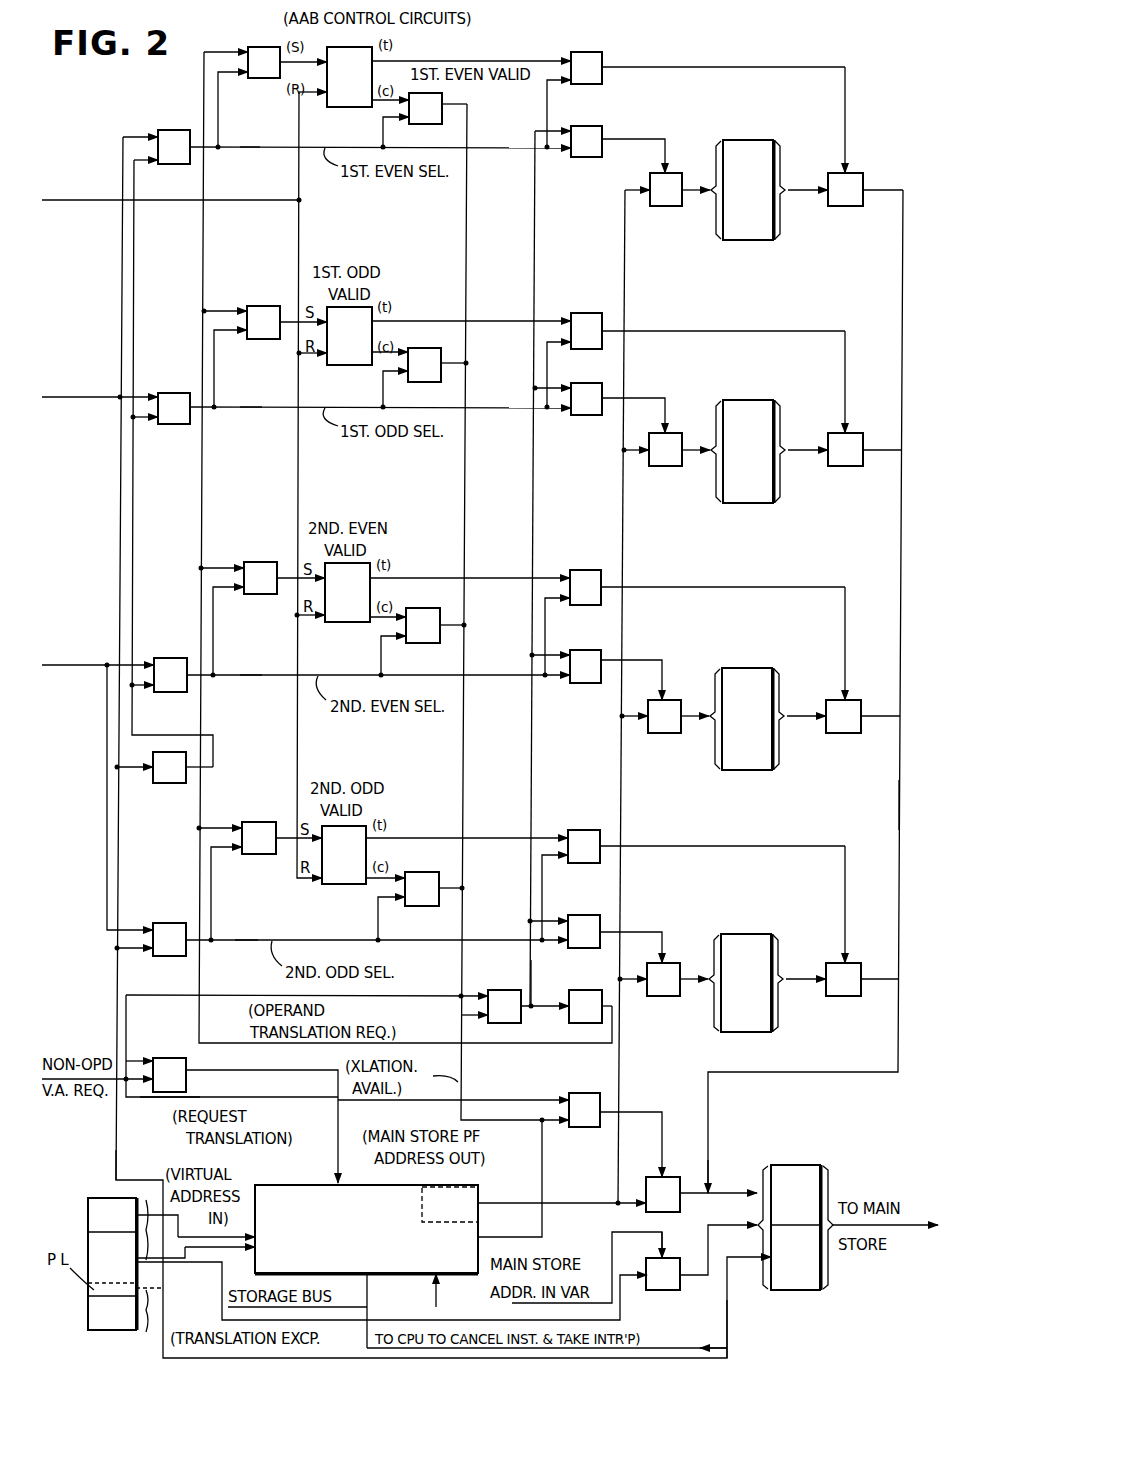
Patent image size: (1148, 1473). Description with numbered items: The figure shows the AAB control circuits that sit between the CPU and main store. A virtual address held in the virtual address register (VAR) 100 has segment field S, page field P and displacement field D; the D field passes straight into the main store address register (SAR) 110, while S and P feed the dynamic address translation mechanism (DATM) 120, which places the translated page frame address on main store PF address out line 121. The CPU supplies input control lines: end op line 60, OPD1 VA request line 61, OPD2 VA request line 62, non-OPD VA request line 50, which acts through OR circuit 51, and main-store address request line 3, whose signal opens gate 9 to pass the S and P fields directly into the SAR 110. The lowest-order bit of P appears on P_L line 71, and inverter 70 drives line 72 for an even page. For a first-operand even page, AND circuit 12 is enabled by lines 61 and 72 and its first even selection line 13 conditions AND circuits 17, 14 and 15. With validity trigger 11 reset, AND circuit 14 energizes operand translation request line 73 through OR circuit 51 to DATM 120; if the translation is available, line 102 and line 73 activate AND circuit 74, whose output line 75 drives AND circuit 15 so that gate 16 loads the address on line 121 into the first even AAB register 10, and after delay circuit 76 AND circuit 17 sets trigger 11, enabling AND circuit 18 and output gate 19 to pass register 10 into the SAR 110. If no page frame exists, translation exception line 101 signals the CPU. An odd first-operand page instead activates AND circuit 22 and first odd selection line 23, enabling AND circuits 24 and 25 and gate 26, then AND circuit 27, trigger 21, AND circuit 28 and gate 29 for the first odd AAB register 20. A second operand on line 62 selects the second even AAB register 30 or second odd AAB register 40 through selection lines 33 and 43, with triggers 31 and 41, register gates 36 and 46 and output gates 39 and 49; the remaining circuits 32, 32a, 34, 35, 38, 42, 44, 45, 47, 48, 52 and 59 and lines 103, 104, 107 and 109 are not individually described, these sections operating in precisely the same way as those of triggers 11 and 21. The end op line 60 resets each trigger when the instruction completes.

The main-store address request line 3 is at (664, 1250).
The gate 9 is at (676, 1262).
The first even AAB register 10 is at (727, 241).
The first even validity trigger 11 is at (340, 105).
The AND circuit 12 is at (172, 165).
The first even selection line 13 is at (256, 148).
The AND circuit 14 is at (430, 125).
The AND circuit 15 is at (590, 126).
The AAB register gate 16 is at (666, 207).
The AND circuit 17 is at (262, 80).
The AND circuit 18 is at (590, 52).
The output gate 19 is at (852, 207).
The first odd AAB register 20 is at (748, 400).
The validity trigger 21 is at (340, 365).
The AND circuit 22 is at (174, 393).
The first odd selection line 23 is at (256, 408).
The AND circuit 24 is at (425, 348).
The AND circuit 25 is at (584, 416).
The AAB register gate 26 is at (668, 467).
The AND circuit 27 is at (262, 306).
The AND circuit 28 is at (588, 313).
The output gate 29 is at (842, 467).
The second even AAB register 30 is at (748, 668).
The validity trigger 31 is at (342, 622).
The AND gate 32 is at (170, 658).
The AND gate 32a is at (260, 562).
The selection line 33 is at (256, 676).
The AND gate 34 is at (424, 608).
The AND gate 35 is at (582, 684).
The AAB register gate 36 is at (666, 734).
The AND gate 38 is at (584, 570).
The output gate 39 is at (842, 734).
The second odd AAB register 40 is at (740, 934).
The validity trigger 41 is at (340, 884).
The AND gate 42 is at (164, 923).
The selection line 43 is at (248, 941).
The AND gate 44 is at (428, 907).
The AND gate 45 is at (582, 915).
The AAB register gate 46 is at (666, 997).
The AND gate 47 is at (256, 822).
The AND gate 48 is at (582, 830).
The output gate 49 is at (842, 997).
The non-OPD VA request line 50 is at (172, 1098).
The OR circuit 51 is at (164, 1058).
The AND gate 52 is at (584, 1093).
The gate 59 is at (676, 1178).
The end op line 60 is at (90, 200).
The OPD1 VA request line 61 is at (108, 400).
The OPD2 VA request line 62 is at (96, 668).
The inverter 70 is at (170, 784).
The P_L line 71 is at (114, 1158).
The inverter output line 72 is at (213, 748).
The operand translation request line 73 is at (242, 996).
The AND circuit 74 is at (502, 990).
The output line 75 is at (534, 968).
The delay circuit 76 is at (574, 1022).
The virtual address register (VAR) 100 is at (86, 1330).
The translation exception line 101 is at (705, 1348).
The translation available line 102 is at (546, 1166).
The line 103 is at (725, 1307).
The request translation line 104 is at (262, 1071).
The line 107 is at (732, 1210).
The AAB register output line 109 is at (896, 800).
The main store address register (SAR) 110 is at (796, 1291).
The dynamic address translation mechanism (DATM) 120 is at (426, 1275).
The main store PF address out line 121 is at (526, 1204).